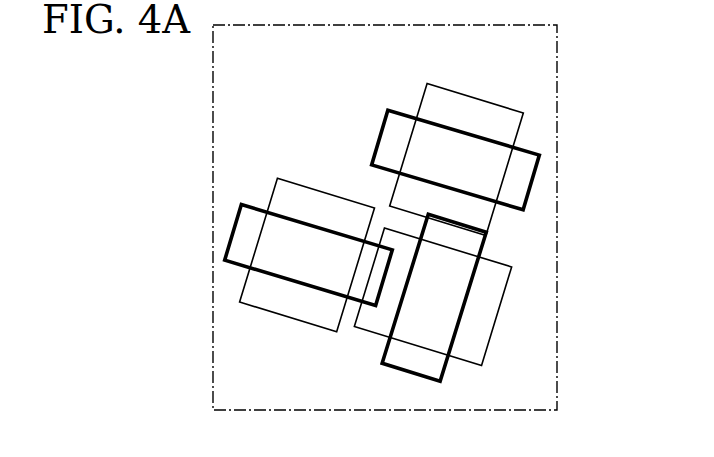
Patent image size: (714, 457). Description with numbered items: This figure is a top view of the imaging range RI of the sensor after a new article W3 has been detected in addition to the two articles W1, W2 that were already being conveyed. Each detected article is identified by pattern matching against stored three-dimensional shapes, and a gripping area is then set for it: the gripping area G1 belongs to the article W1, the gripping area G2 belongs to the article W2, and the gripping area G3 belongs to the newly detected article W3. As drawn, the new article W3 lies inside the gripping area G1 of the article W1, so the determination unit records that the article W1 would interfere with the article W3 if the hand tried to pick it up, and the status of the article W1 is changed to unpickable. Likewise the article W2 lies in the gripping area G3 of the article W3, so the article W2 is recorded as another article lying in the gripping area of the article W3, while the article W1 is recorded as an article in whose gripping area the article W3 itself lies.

The imaging range RI is at (557, 112).
The article W1 is at (280, 317).
The article W2 is at (495, 104).
The article W3 is at (492, 328).
The gripping area G1 is at (250, 206).
The gripping area G2 is at (383, 127).
The gripping area G3 is at (482, 246).